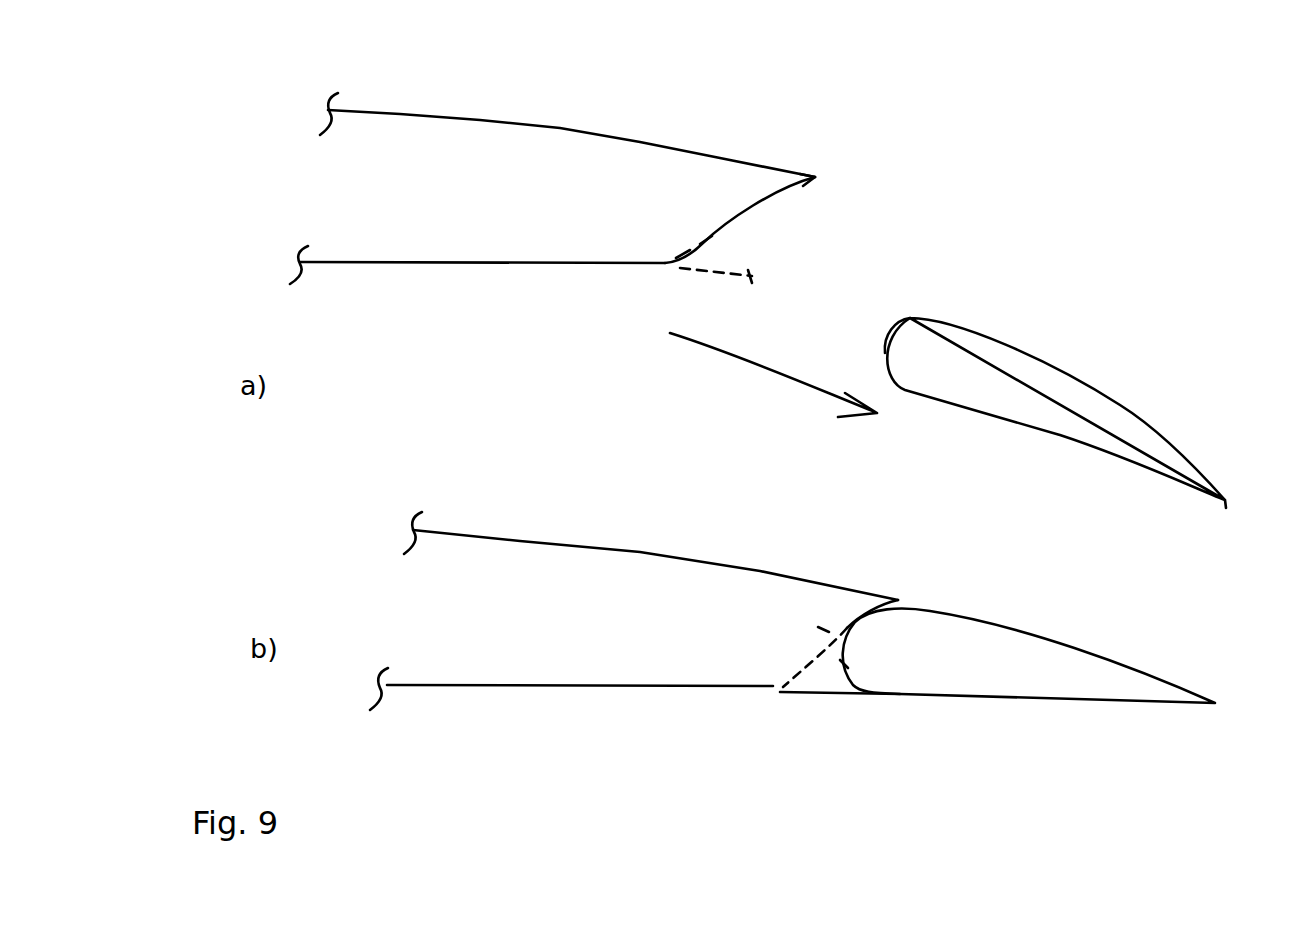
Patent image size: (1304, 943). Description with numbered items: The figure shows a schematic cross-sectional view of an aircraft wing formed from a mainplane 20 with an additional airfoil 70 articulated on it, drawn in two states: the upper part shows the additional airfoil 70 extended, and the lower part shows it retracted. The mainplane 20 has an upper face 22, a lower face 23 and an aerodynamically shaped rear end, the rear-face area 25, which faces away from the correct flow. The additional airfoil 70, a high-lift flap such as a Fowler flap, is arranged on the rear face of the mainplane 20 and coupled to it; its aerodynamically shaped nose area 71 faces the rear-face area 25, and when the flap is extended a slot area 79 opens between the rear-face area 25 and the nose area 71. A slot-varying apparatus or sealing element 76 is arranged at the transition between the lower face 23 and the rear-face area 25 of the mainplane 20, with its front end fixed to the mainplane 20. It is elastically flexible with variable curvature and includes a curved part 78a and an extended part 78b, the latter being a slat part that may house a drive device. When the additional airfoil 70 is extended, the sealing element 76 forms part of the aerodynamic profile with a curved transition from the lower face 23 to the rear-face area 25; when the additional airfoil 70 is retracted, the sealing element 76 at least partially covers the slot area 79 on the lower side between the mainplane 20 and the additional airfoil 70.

The mainplane 20 is at (490, 205).
The upper face 22 is at (541, 120).
The lower face 23 is at (432, 263).
The rear-face area 25 is at (752, 198).
The additional airfoil 70 is at (1027, 400).
The nose area 71 is at (908, 318).
The slot-varying apparatus or sealing element 76 is at (711, 248).
The curved part 78a is at (685, 250).
The extended part 78b is at (705, 245).
The slot area 79 is at (830, 675).